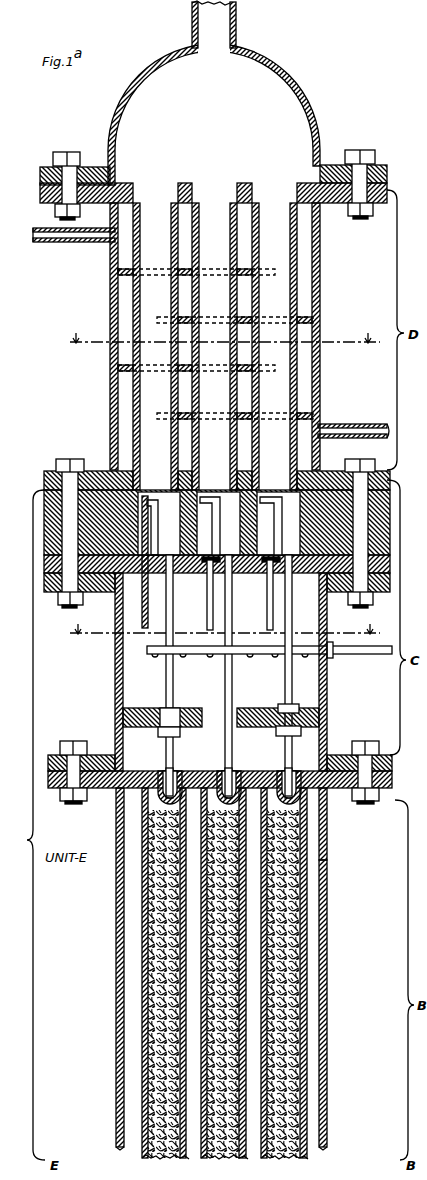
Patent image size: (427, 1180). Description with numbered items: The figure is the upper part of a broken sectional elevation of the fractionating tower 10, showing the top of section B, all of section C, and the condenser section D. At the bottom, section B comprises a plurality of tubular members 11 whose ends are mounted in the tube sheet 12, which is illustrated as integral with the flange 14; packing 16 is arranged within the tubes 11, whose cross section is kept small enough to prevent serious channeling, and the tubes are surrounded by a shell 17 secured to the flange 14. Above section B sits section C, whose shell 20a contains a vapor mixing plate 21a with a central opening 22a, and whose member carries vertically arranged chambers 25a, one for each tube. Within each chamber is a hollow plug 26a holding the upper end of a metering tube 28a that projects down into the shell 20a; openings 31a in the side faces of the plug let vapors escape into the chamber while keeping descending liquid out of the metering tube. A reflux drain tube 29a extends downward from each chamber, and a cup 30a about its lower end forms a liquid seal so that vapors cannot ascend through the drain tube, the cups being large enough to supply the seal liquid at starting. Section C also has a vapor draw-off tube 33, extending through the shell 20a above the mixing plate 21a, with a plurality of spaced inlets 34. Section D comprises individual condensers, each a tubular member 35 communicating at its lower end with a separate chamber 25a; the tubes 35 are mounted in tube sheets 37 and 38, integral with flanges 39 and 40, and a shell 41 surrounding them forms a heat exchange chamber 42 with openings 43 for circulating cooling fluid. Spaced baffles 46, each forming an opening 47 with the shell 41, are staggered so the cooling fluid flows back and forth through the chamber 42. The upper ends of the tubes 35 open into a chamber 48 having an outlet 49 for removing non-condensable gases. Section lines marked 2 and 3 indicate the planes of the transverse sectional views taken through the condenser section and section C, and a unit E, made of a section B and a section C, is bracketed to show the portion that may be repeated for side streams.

The tower 10 is at (342, 903).
The tubular members 11 is at (307, 1090).
The tube sheet 12 is at (324, 792).
The flange 14 is at (112, 790).
The packing 16 is at (160, 1120).
The shell 17 is at (330, 950).
The shell 20a is at (328, 692).
The vapor mixing plate 21a is at (125, 713).
The opening 22a is at (243, 712).
The chamber 25a is at (165, 496).
The hollow plug 26a is at (170, 498).
The metering tube 28a is at (155, 625).
The reflux drain tube 29a is at (172, 690).
The cup 30a is at (165, 770).
The openings 31a is at (222, 497).
The vapor draw-off tube 33 is at (358, 654).
The spaced inlets 34 is at (250, 654).
The tubular member 35 is at (320, 232).
The tube sheet 37 is at (330, 167).
The tube sheet 38 is at (118, 466).
The flange 39 is at (387, 185).
The flange 40 is at (52, 462).
The shell 41 is at (112, 371).
The chamber 42 is at (126, 292).
The openings 43 is at (62, 243).
The baffles 46 is at (118, 272).
The opening 47 is at (126, 319).
The chamber 48 is at (280, 86).
The outlet 49 is at (192, 18).
The section line 2- 2 is at (219, 341).
The section line 3- 3 is at (222, 632).